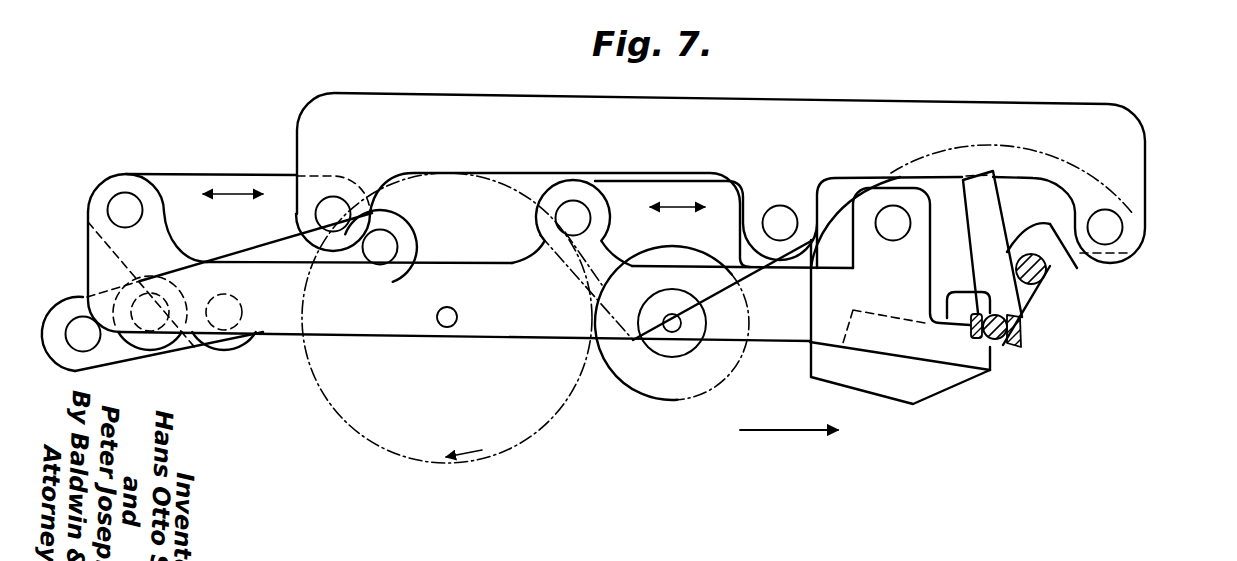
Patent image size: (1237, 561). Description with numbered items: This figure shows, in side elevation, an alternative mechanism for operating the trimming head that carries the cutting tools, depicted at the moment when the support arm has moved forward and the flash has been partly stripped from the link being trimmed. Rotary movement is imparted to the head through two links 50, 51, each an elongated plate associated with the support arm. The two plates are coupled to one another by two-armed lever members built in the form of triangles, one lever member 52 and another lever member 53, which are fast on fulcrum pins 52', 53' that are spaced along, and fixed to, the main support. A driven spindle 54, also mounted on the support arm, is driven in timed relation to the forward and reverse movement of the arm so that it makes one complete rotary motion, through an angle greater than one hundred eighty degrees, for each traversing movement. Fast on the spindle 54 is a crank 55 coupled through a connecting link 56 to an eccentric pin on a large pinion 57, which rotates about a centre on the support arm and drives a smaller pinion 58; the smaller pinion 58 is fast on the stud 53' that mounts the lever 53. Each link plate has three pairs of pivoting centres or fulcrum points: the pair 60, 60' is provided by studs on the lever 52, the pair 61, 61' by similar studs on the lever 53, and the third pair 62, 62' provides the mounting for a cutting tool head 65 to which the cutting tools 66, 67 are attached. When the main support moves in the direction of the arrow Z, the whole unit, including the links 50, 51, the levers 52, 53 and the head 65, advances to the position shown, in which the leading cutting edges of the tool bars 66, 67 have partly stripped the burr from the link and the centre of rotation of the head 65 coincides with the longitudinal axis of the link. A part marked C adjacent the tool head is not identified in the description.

The link 50 is at (692, 141).
The link 51 is at (530, 329).
The lever member 52 is at (229, 253).
The fulcrum pin 52' is at (326, 260).
The lever member 53 is at (737, 222).
The fulcrum pin 53' is at (688, 320).
The driven spindle 54 is at (172, 345).
The crank 55 is at (97, 363).
The connecting link 56 is at (281, 246).
The large pinion 57 is at (505, 434).
The smaller pinion 58 is at (692, 388).
The pivoting centre 60 is at (133, 183).
The pivoting centre 60' is at (345, 191).
The pivoting centre 61 is at (580, 187).
The pivoting centre 61' is at (792, 200).
The pivot centre 62 is at (921, 233).
The pivot centre 62' is at (1140, 208).
The cutting tool head 65 is at (1050, 284).
The cutting tool 66 is at (992, 229).
The cutting tool 67 is at (973, 358).
The cutter C is at (1030, 293).
The arrow Z is at (789, 446).